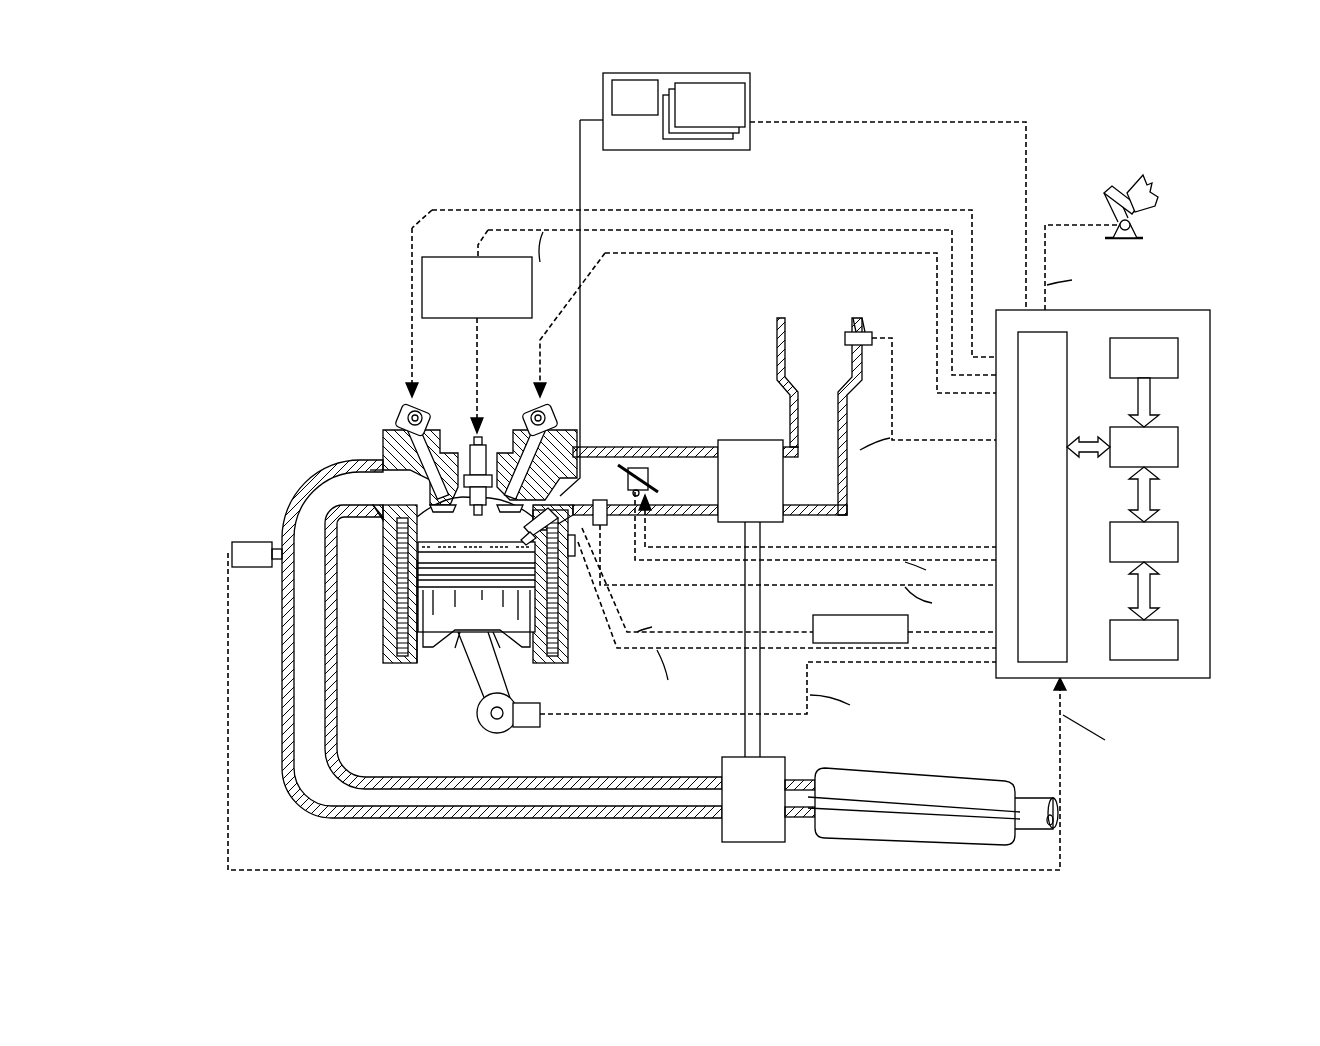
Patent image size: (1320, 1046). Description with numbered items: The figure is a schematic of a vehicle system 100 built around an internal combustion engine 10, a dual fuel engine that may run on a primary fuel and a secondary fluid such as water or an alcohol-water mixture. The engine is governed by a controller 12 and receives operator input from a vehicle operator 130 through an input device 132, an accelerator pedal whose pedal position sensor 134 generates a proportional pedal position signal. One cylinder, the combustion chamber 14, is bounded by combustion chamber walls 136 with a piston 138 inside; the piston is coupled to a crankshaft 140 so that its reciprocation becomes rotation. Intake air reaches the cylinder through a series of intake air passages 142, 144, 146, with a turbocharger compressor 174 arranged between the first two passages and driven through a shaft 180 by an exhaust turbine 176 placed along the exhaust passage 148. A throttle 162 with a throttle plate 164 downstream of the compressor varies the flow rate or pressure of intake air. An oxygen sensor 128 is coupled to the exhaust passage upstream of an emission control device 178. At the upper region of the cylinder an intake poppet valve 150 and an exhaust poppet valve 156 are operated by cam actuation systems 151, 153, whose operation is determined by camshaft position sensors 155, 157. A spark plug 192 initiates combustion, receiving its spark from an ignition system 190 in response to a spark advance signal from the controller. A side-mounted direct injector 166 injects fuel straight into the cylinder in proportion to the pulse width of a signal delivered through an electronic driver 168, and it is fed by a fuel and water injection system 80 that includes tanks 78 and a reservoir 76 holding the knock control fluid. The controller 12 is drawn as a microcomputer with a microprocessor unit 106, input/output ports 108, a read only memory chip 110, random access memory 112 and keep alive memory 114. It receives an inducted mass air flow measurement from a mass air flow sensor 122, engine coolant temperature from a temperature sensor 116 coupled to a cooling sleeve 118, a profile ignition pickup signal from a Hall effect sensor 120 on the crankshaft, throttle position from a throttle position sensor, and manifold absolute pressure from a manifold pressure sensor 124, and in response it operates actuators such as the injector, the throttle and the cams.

The vehicle system 100 is at (105, 106).
The internal combustion engine 10 is at (370, 320).
The controller 12 is at (1143, 483).
The cylinder 14 is at (395, 532).
The reservoir 76 is at (642, 106).
The tanks 78 is at (719, 116).
The fuel and water injection system 80 is at (806, 202).
The microprocessor unit 106 is at (1180, 447).
The input/output ports 108 is at (1068, 340).
The read only memory chip 110 is at (1180, 360).
The random access memory 112 is at (1180, 545).
The keep alive memory 114 is at (1180, 645).
The temperature sensor 116 is at (578, 560).
The cooling sleeve 118 is at (548, 665).
The Hall effect sensor 120 is at (525, 728).
The mass air flow sensor 122 is at (868, 331).
The manifold pressure sensor 124 is at (605, 527).
The oxygen sensor 128 is at (231, 546).
The vehicle operator 130 is at (1141, 244).
The input device 132 is at (1108, 200).
The pedal position sensor 134 is at (1140, 230).
The combustion chamber walls 136 is at (418, 662).
The piston 138 is at (460, 625).
The crankshaft 140 is at (488, 733).
The intake air passage 142 is at (830, 361).
The intake air passage 144 is at (706, 492).
The intake air passage 146 is at (610, 492).
The exhaust passage 148 is at (367, 498).
The intake poppet valve 150 is at (512, 468).
The cam actuation system 151 is at (532, 405).
The cam actuation system 153 is at (420, 405).
The camshaft position sensor 155 is at (558, 382).
The exhaust poppet valve 156 is at (388, 458).
The camshaft position sensor 157 is at (403, 370).
The throttle 162 is at (641, 467).
The throttle plate 164 is at (799, 491).
The injector 166 is at (769, 558).
The electronic driver 168 is at (815, 615).
The compressor 174 is at (732, 440).
The exhaust turbine 176 is at (721, 838).
The emission control device 178 is at (975, 780).
The shaft 180 is at (752, 712).
The ignition system 190 is at (440, 257).
The spark plug 192 is at (472, 445).